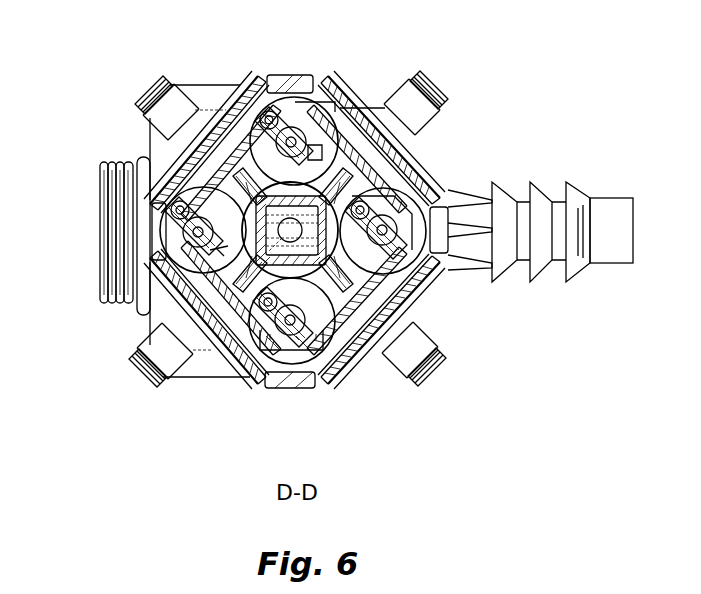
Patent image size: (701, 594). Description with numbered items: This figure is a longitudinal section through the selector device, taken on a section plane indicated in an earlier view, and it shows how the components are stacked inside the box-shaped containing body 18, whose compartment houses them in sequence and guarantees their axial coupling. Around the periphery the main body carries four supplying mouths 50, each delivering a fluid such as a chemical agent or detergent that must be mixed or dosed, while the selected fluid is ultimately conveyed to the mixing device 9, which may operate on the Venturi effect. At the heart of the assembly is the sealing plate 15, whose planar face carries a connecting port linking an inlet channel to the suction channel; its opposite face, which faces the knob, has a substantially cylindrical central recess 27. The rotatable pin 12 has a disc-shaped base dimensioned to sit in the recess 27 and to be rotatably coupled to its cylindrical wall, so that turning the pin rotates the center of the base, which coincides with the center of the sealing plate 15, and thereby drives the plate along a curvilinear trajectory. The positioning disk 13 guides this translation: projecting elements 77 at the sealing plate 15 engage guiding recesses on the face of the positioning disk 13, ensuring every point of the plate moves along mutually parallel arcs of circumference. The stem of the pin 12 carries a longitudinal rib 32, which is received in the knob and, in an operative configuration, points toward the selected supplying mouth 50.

The mixing device 9 is at (538, 188).
The rotatable pin 12 is at (282, 278).
The positioning disk 13 is at (240, 365).
The sealing plate 15 is at (330, 115).
The containing body 18 is at (283, 386).
The central recess 27 is at (247, 123).
The longitudinal rib 32 is at (380, 302).
The supplying mouth 50 is at (135, 104).
The projecting element 77 is at (273, 110).